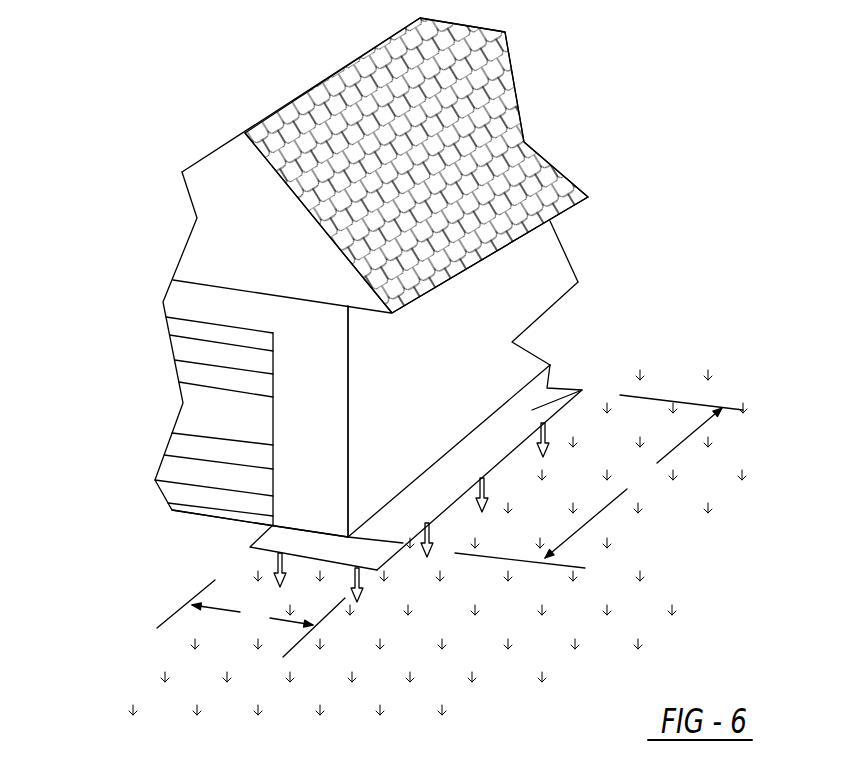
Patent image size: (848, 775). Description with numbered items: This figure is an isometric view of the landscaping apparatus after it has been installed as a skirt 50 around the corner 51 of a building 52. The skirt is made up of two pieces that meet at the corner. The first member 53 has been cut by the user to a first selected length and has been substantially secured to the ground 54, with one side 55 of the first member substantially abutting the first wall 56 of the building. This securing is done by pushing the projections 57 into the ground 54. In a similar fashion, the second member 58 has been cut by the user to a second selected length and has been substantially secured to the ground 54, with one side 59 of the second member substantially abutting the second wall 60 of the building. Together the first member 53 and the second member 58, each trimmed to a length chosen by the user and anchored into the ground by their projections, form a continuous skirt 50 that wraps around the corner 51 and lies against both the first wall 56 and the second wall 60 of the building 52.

The skirt 50 is at (157, 592).
The corner 51 is at (350, 412).
The building 52 is at (580, 48).
The first member 53 is at (390, 558).
The ground 54 is at (618, 593).
The side 55 is at (313, 530).
The first wall 56 is at (303, 393).
The projections 57 is at (273, 565).
The second member 58 is at (550, 402).
The side 59 is at (467, 434).
The second wall 60 is at (500, 297).